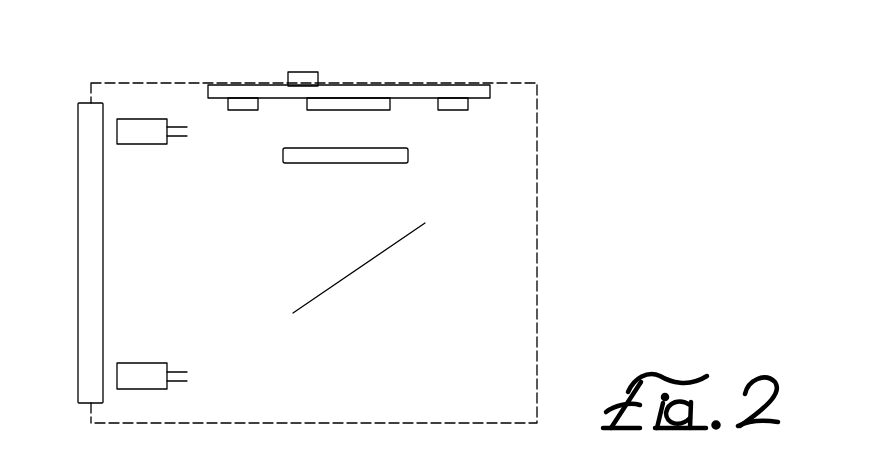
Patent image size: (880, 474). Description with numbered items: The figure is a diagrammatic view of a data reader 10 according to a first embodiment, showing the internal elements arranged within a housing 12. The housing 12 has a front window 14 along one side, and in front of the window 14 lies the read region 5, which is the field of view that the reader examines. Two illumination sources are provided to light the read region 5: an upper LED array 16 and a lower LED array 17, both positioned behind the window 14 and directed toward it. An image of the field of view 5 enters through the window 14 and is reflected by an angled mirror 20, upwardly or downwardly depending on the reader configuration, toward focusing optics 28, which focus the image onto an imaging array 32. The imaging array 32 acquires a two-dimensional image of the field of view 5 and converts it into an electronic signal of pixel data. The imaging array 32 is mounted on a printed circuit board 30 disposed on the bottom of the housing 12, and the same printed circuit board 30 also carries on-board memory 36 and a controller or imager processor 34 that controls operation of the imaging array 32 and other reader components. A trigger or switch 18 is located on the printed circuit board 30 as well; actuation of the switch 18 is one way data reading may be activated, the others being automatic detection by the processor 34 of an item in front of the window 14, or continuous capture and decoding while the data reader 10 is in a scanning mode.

The read region 5 is at (43, 255).
The data reader 10 is at (495, 63).
The housing 12 is at (538, 228).
The front window 14 is at (90, 330).
The upper LED array 16 is at (143, 144).
The lower LED array 17 is at (148, 363).
The trigger or switch 18 is at (307, 72).
The mirror 20 is at (382, 252).
The focusing optics 28 is at (337, 163).
The printed circuit board 30 is at (413, 92).
The imaging array 32 is at (367, 111).
The imager processor 34 is at (457, 111).
The on-board memory 36 is at (243, 110).